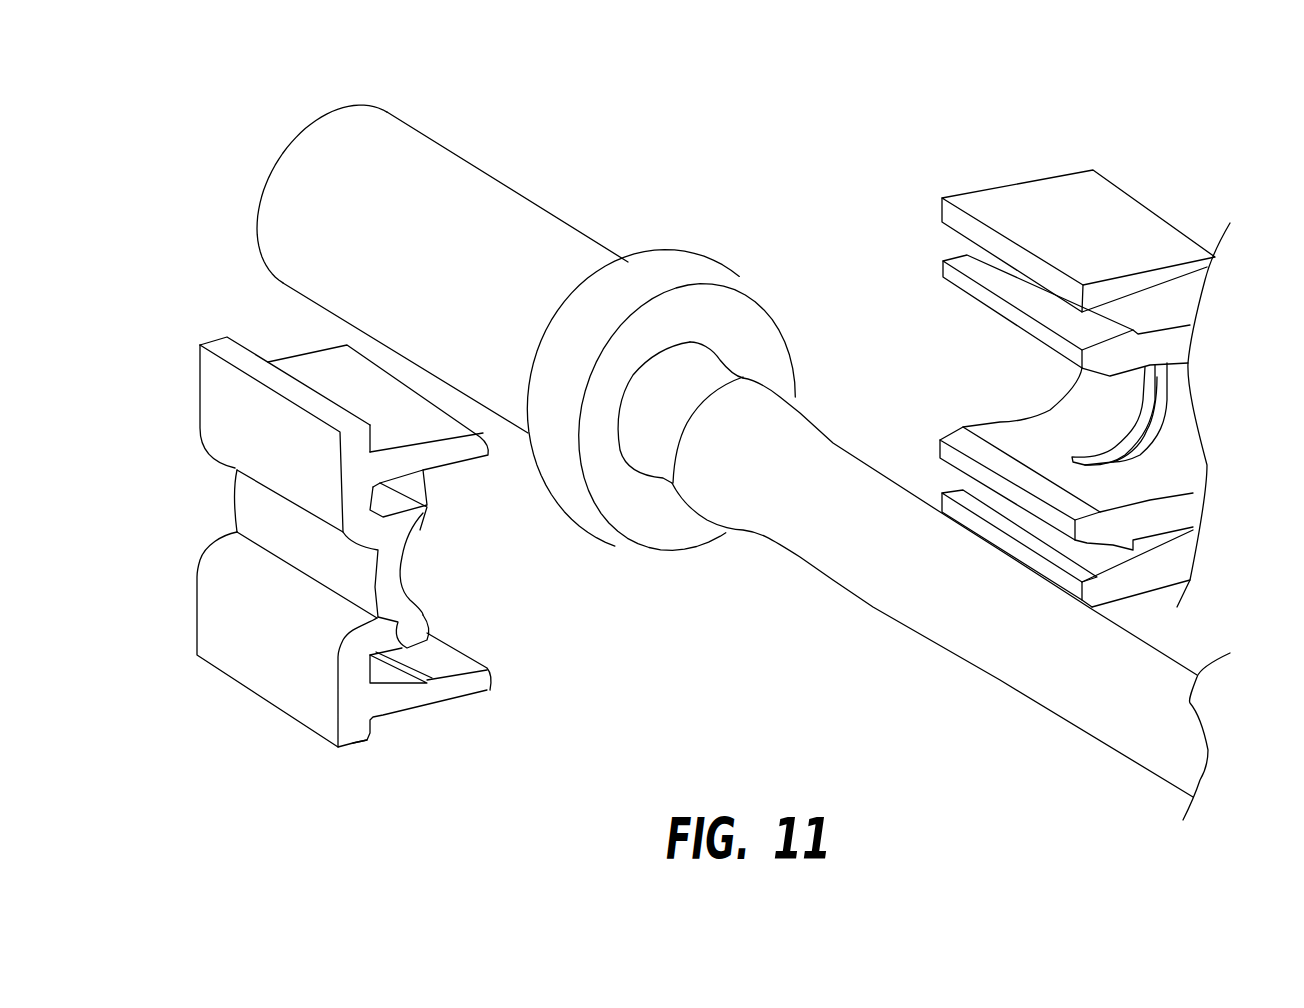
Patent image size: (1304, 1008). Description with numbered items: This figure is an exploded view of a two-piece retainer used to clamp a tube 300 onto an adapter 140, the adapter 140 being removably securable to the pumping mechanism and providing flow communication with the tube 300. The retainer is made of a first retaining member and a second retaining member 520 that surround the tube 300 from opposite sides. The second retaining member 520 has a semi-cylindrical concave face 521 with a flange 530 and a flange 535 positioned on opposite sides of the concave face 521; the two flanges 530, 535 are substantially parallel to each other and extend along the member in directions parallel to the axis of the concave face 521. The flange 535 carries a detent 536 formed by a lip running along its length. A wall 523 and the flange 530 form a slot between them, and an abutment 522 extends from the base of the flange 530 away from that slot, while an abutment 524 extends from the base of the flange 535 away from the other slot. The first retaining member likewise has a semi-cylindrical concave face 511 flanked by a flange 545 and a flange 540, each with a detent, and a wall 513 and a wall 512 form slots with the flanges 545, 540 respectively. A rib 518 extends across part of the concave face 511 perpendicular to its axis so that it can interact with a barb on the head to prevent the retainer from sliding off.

The adapter 140 is at (450, 185).
The tube 300 is at (897, 593).
The second retaining member 520 is at (280, 681).
The concave face 521 is at (400, 576).
The abutment 522 is at (362, 736).
The wall 523 is at (408, 621).
The abutment 524 is at (348, 443).
The flange 530 is at (458, 694).
The flange 535 is at (485, 452).
The detent 536 is at (425, 468).
The concave face 511 is at (1165, 485).
The wall 512 is at (1167, 577).
The wall 513 is at (1027, 187).
The rib 518 is at (1140, 440).
The flange 540 is at (963, 428).
The flange 545 is at (950, 283).